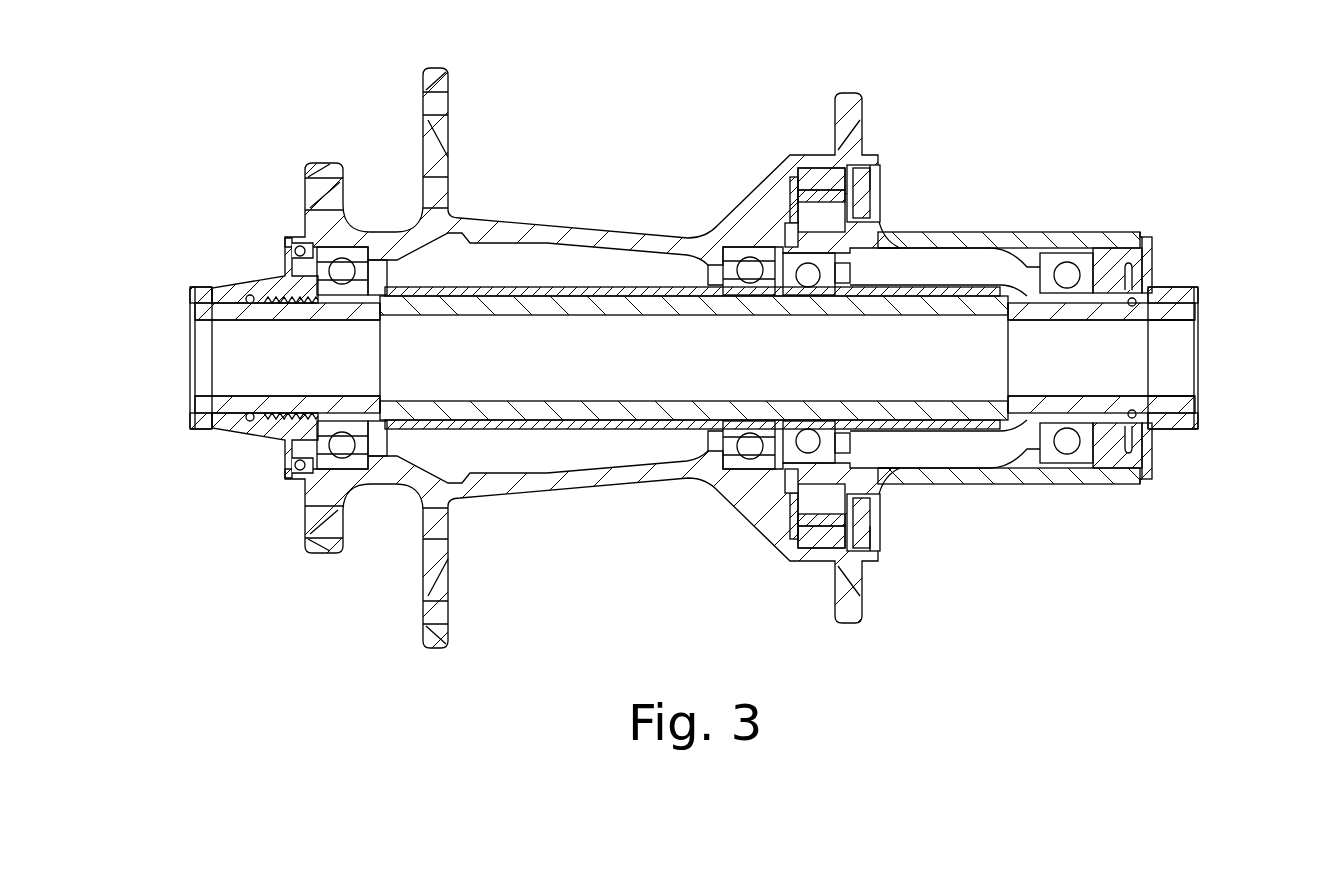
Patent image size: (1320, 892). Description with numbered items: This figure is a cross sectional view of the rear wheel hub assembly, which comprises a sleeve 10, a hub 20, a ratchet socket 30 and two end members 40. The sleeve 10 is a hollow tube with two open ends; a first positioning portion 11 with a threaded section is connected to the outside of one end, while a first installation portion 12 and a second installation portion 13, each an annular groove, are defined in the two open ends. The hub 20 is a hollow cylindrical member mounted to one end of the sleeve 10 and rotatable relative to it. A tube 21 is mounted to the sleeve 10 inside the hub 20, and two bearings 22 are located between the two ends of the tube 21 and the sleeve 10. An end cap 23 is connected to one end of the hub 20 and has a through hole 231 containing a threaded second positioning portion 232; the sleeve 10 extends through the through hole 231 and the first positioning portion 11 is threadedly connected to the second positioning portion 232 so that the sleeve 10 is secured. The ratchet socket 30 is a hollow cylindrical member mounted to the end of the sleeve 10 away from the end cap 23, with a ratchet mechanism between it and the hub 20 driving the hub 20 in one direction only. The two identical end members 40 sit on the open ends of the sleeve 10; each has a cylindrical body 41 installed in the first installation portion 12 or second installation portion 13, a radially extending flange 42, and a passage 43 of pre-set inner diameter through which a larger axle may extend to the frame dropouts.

The sleeve 10 is at (695, 436).
The first positioning portion 11 is at (282, 393).
The first installation portion 12 is at (340, 383).
The second installation portion 13 is at (1100, 405).
The hub 20 is at (557, 190).
The tube 21 is at (520, 428).
The bearings 22 is at (352, 253).
The end cap 23 is at (213, 327).
The through hole 231 is at (230, 412).
The second positioning portion 232 is at (287, 395).
The ratchet socket 30 is at (967, 329).
The end members 40 is at (701, 357).
The cylindrical body 41 is at (285, 317).
The flange 42 is at (205, 422).
The passage 43 is at (1178, 385).